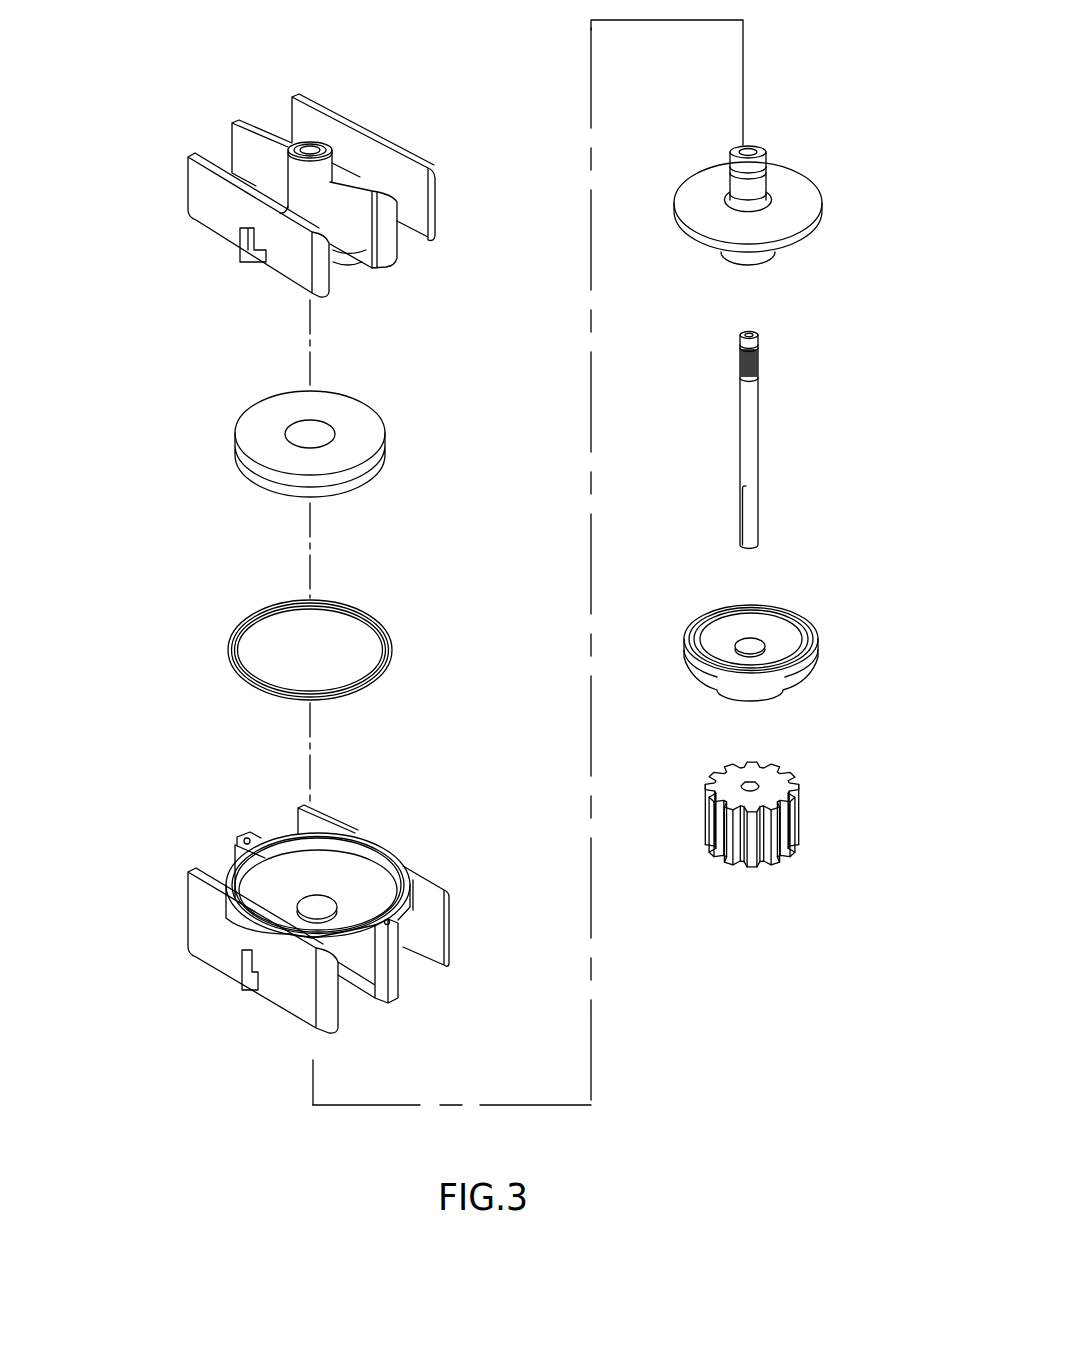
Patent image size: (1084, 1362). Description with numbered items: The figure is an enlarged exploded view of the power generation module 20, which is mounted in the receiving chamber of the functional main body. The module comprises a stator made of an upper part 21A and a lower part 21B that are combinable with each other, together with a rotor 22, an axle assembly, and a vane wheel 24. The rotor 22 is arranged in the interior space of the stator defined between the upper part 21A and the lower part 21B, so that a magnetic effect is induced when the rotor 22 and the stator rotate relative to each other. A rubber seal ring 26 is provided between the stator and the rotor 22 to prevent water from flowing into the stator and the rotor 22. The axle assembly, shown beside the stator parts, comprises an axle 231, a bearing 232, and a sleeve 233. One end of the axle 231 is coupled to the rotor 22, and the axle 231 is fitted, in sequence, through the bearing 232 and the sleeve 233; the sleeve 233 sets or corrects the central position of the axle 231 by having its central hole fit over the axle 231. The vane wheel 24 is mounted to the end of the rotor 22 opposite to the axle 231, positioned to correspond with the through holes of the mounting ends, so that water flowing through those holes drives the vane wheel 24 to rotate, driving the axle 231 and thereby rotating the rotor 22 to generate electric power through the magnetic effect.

The power generation module 20 is at (137, 105).
The upper part 21A is at (417, 163).
The lower part 21B is at (405, 867).
The rotor 22 is at (372, 432).
The rubber seal ring 26 is at (387, 627).
The axle 231 is at (753, 440).
The bearing 232 is at (787, 183).
The sleeve 233 is at (817, 657).
The vane wheel 24 is at (780, 823).